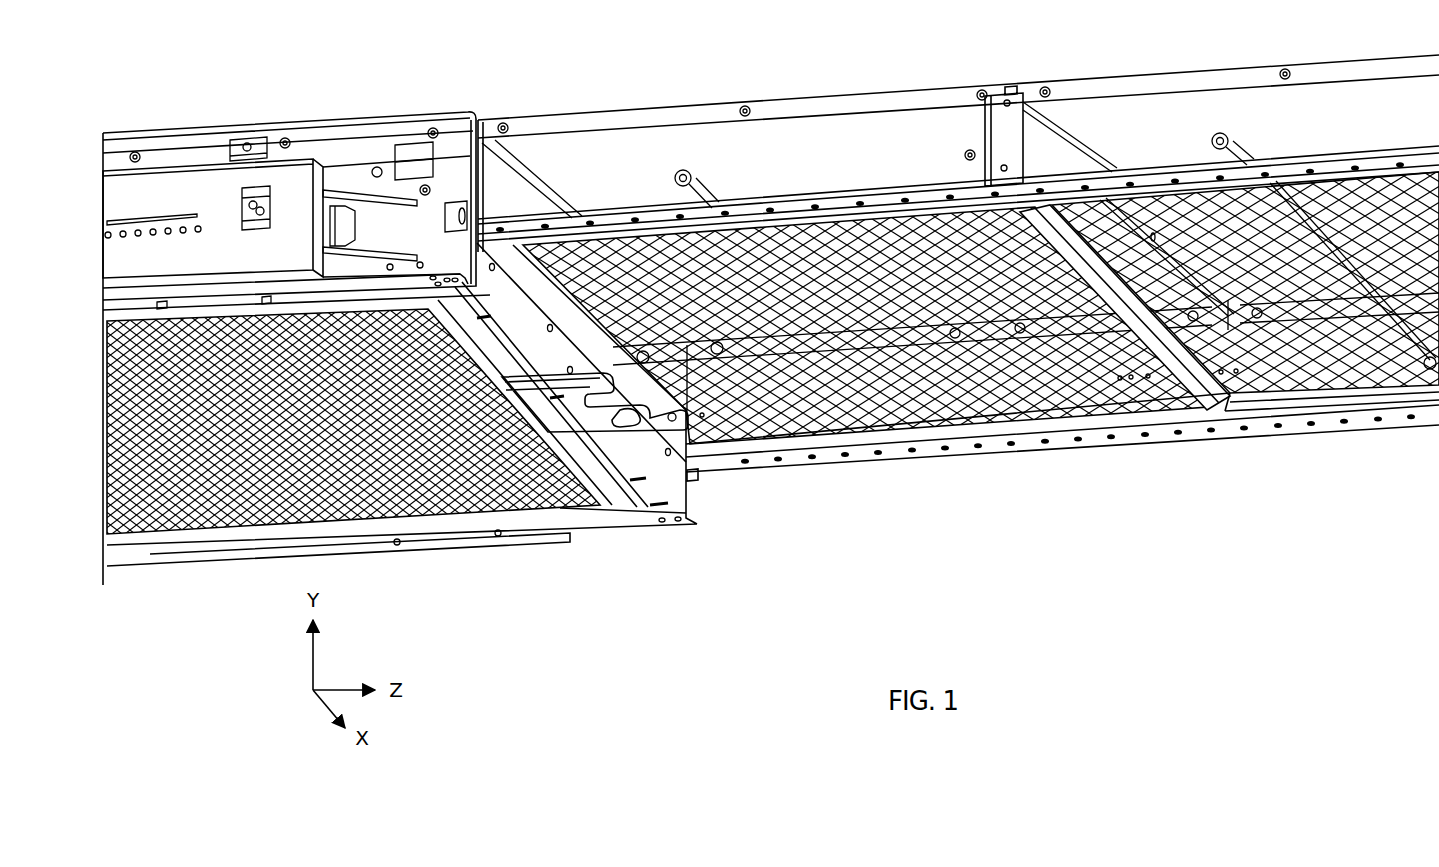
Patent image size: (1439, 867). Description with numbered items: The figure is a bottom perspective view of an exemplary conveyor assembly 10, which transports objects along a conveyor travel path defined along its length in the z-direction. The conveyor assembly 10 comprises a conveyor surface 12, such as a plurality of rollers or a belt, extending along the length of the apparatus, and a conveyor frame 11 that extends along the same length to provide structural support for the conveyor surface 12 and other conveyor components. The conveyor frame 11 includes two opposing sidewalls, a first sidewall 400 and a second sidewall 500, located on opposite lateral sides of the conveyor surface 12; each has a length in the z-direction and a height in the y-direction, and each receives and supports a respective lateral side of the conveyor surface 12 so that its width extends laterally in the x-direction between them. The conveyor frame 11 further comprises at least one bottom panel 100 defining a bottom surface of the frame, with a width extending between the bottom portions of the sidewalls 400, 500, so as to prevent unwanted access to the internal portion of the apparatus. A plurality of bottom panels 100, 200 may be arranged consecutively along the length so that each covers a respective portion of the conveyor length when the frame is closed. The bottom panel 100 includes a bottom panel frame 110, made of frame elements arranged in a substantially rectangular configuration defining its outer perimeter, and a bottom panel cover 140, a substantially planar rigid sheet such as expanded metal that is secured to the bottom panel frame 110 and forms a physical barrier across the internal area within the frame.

The conveyor assembly 10 is at (771, 309).
The conveyor frame 11 is at (601, 150).
The conveyor surface 12 is at (943, 88).
The bottom panel 100 is at (1034, 405).
The bottom panel frame 110 is at (1210, 413).
The bottom panel cover 140 is at (955, 398).
The bottom panel 200 is at (1384, 375).
The first sidewall 400 is at (735, 140).
The second sidewall 500 is at (880, 455).